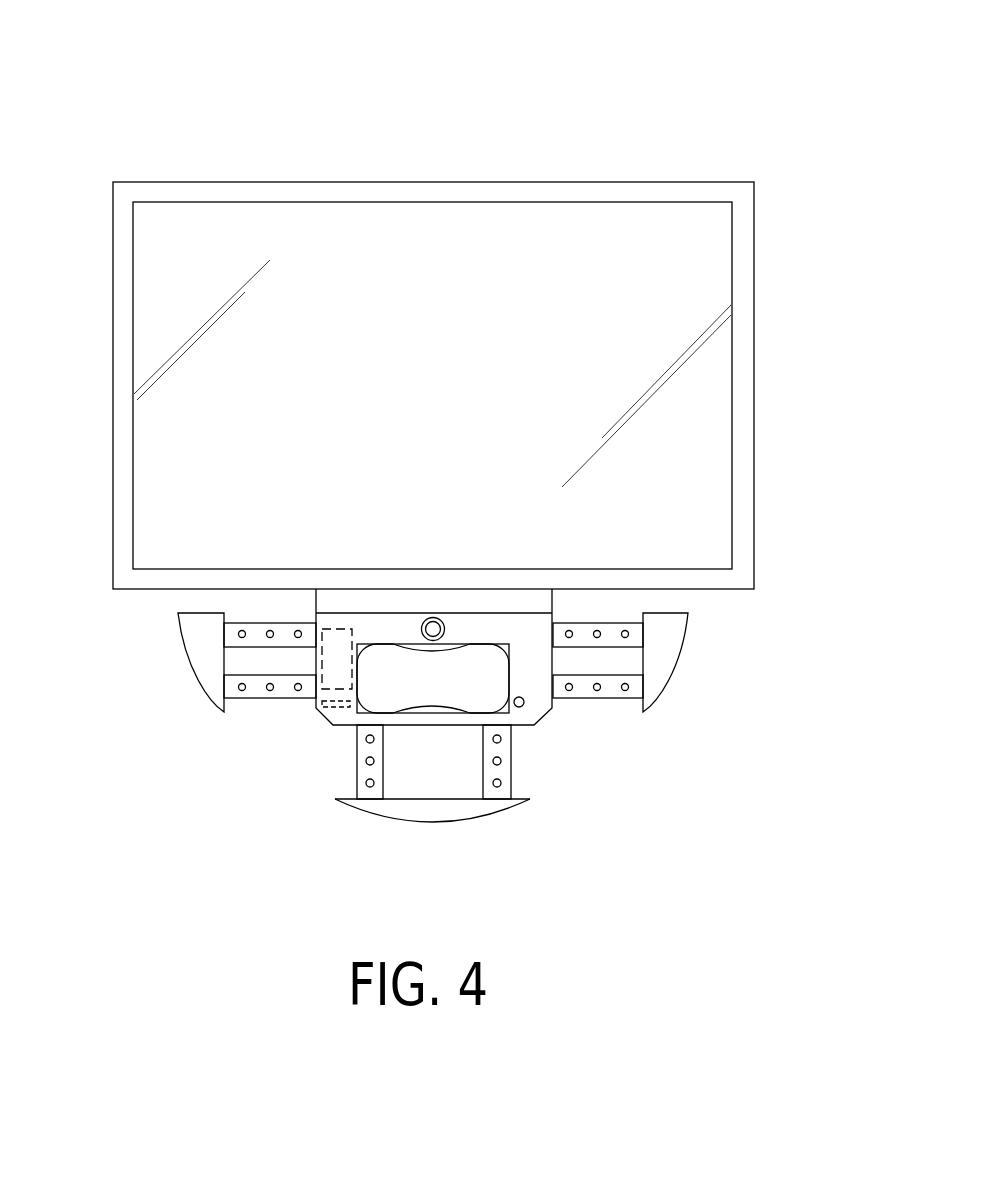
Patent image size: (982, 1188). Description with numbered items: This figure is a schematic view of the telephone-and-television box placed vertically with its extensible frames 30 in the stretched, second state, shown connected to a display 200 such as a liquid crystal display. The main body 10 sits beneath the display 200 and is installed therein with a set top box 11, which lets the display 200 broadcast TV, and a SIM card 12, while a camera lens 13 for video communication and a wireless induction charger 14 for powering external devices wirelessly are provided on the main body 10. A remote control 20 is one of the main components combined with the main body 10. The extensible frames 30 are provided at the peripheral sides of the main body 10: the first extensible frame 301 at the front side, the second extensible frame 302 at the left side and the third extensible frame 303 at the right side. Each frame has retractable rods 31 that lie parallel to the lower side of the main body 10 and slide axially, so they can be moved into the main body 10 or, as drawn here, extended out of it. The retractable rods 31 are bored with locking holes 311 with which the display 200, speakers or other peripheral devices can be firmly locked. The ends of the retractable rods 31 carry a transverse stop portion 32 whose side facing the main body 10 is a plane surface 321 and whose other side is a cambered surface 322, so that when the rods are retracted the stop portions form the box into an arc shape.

The display 200 is at (597, 161).
The main body 10 is at (566, 725).
The set top box 11 is at (338, 630).
The SIM card 12 is at (343, 707).
The camera lens 13 is at (433, 629).
The wireless induction charger 14 is at (418, 712).
The remote control 20 is at (437, 731).
The extensible frames 30 is at (410, 714).
The first extensible frame 301 is at (493, 805).
The second extensible frame 302 is at (190, 623).
The third extensible frame 303 is at (667, 652).
The retractable rods 31 is at (200, 745).
The locking holes 311 is at (242, 686).
The stop portion 32 is at (197, 732).
The plane surface 321 is at (212, 697).
The cambered surface 322 is at (185, 655).